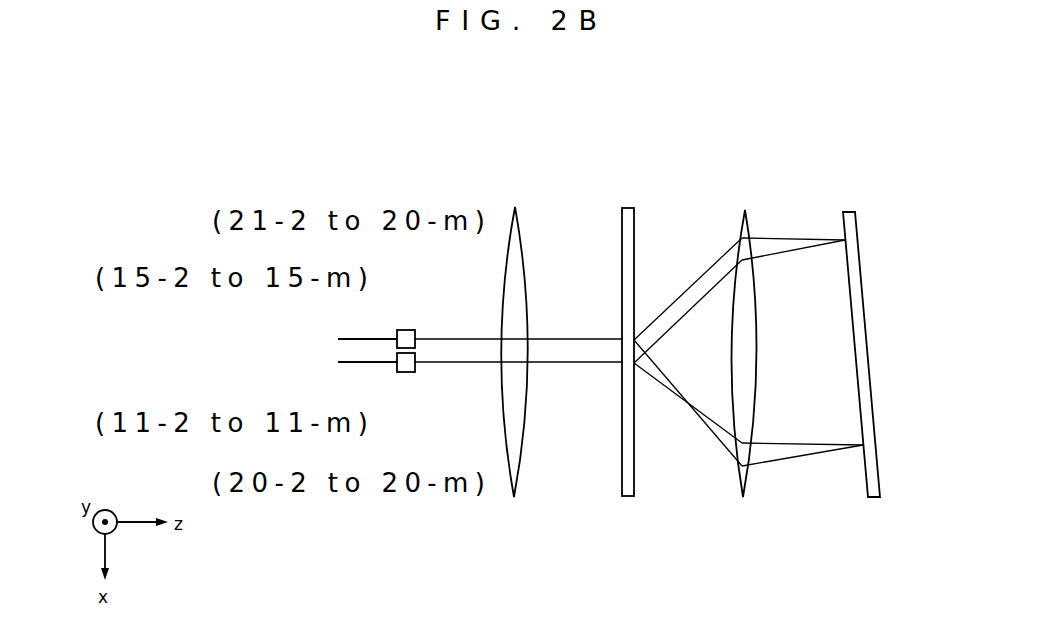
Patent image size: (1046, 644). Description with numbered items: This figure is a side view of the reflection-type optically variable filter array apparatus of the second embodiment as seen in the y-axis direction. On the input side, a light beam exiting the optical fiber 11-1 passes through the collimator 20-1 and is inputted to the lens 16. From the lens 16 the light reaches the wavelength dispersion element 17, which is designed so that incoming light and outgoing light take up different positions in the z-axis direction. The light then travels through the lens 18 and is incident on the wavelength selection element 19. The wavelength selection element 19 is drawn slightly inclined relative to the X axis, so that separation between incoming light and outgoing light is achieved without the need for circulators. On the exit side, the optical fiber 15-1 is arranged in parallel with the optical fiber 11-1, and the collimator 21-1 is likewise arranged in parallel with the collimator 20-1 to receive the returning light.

The optical fiber 11-1 is at (364, 362).
The optical fiber 15-1 is at (364, 339).
The collimator 20-1 is at (408, 372).
The collimator 21-1 is at (408, 330).
The lens 16 is at (522, 220).
The wavelength dispersion element 17 is at (636, 220).
The lens 18 is at (754, 220).
The wavelength selection element 19 is at (858, 220).